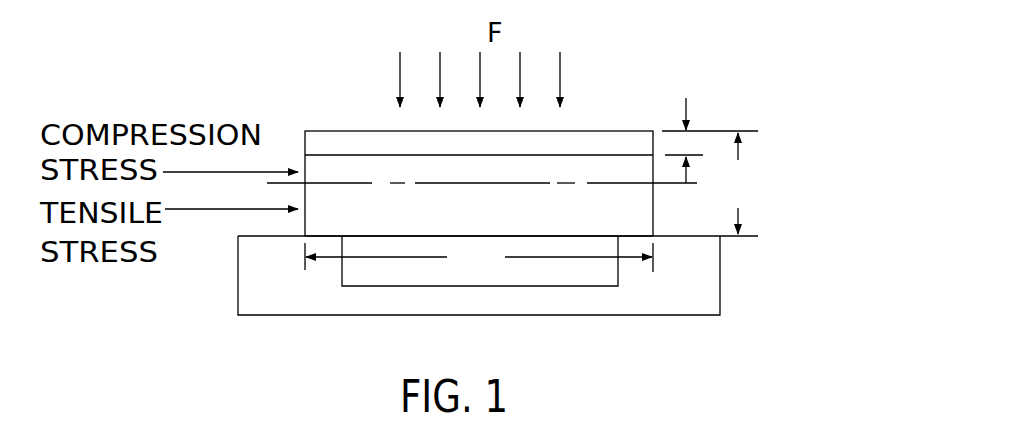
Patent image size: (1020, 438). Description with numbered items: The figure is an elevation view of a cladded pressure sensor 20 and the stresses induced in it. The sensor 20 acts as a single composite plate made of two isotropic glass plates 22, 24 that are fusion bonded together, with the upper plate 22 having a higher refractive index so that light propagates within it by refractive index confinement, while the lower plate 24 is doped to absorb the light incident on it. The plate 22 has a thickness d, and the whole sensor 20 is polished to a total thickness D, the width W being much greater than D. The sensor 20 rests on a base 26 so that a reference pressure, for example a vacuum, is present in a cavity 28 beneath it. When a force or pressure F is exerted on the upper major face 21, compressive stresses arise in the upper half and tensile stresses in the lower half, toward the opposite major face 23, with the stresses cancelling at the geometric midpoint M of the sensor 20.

The cladded pressure sensor 20 is at (641, 50).
The major face 21 is at (372, 126).
The plate 22 is at (317, 140).
The major face 23 is at (546, 244).
The plate 24 is at (357, 166).
The base 26 is at (726, 278).
The cavity 28 is at (596, 274).